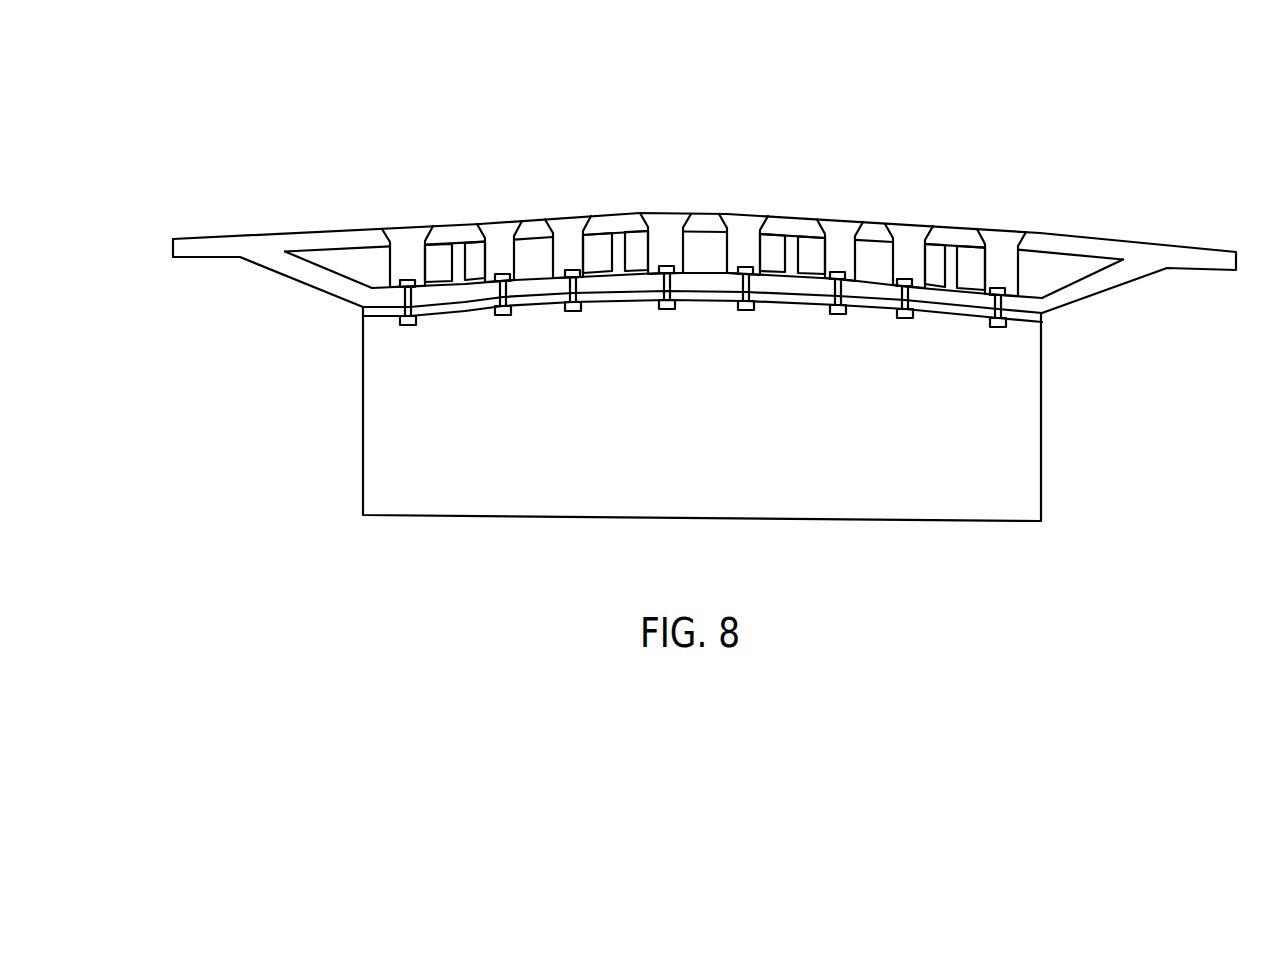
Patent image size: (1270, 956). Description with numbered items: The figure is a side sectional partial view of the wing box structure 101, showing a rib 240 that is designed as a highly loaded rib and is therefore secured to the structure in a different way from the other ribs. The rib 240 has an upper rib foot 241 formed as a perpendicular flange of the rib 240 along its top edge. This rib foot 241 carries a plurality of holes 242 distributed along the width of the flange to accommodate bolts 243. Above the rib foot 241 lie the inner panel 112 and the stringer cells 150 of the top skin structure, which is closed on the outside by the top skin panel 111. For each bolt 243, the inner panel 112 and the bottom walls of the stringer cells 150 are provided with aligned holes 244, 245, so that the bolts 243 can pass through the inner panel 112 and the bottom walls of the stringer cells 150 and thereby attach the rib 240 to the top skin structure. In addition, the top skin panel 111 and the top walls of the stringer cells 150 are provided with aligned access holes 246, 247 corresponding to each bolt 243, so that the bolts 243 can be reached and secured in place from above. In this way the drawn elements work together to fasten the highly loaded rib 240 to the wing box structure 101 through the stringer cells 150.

The wing box structure 101 is at (982, 112).
The top skin panel 111 is at (207, 247).
The inner panel 112 is at (313, 277).
The stringer cells 150 is at (697, 247).
The rib 240 is at (1028, 472).
The upper rib foot 241 is at (1047, 317).
The holes 242 is at (576, 292).
The bolts 243 is at (506, 292).
The aligned holes 244 is at (670, 292).
The aligned holes 245 is at (749, 292).
The access holes 246 is at (840, 230).
The access holes 247 is at (917, 242).